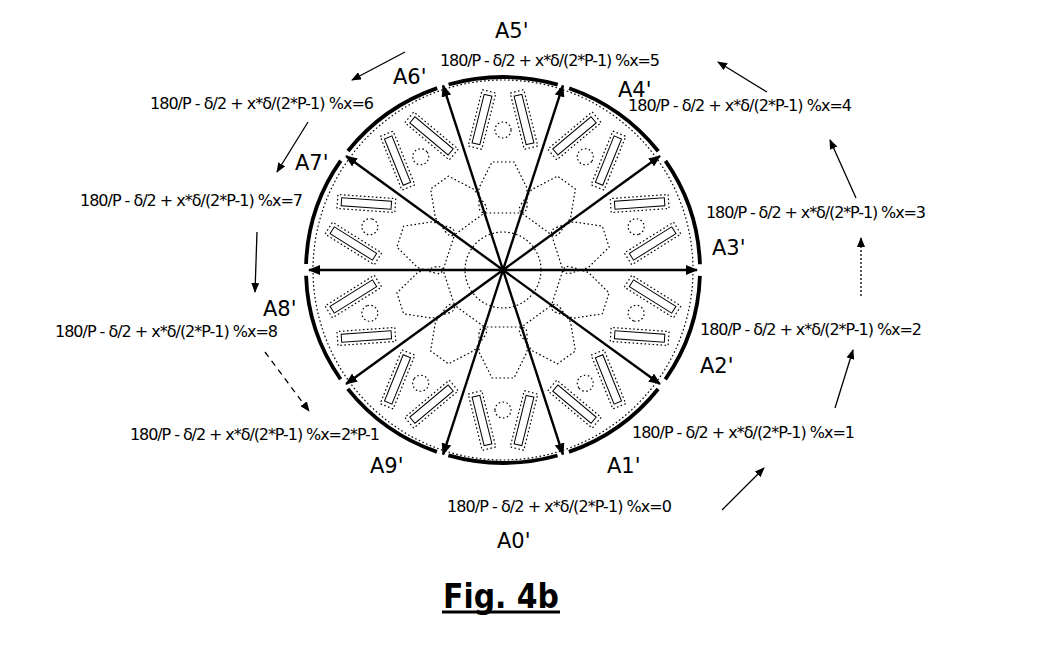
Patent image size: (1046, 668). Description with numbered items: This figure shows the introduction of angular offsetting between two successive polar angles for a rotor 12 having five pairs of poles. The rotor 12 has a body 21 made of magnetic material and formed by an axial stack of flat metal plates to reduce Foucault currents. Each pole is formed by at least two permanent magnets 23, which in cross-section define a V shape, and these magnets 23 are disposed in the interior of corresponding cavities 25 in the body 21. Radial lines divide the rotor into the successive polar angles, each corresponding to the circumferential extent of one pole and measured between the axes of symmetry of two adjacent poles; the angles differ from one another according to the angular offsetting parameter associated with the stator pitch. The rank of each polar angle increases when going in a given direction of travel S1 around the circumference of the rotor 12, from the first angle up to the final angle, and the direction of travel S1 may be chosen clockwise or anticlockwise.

The rotor 12 is at (155, 152).
The body 21 is at (441, 425).
The permanent magnets 23 is at (648, 199).
The cavities 25 is at (665, 292).
The direction of travel S1 is at (840, 487).